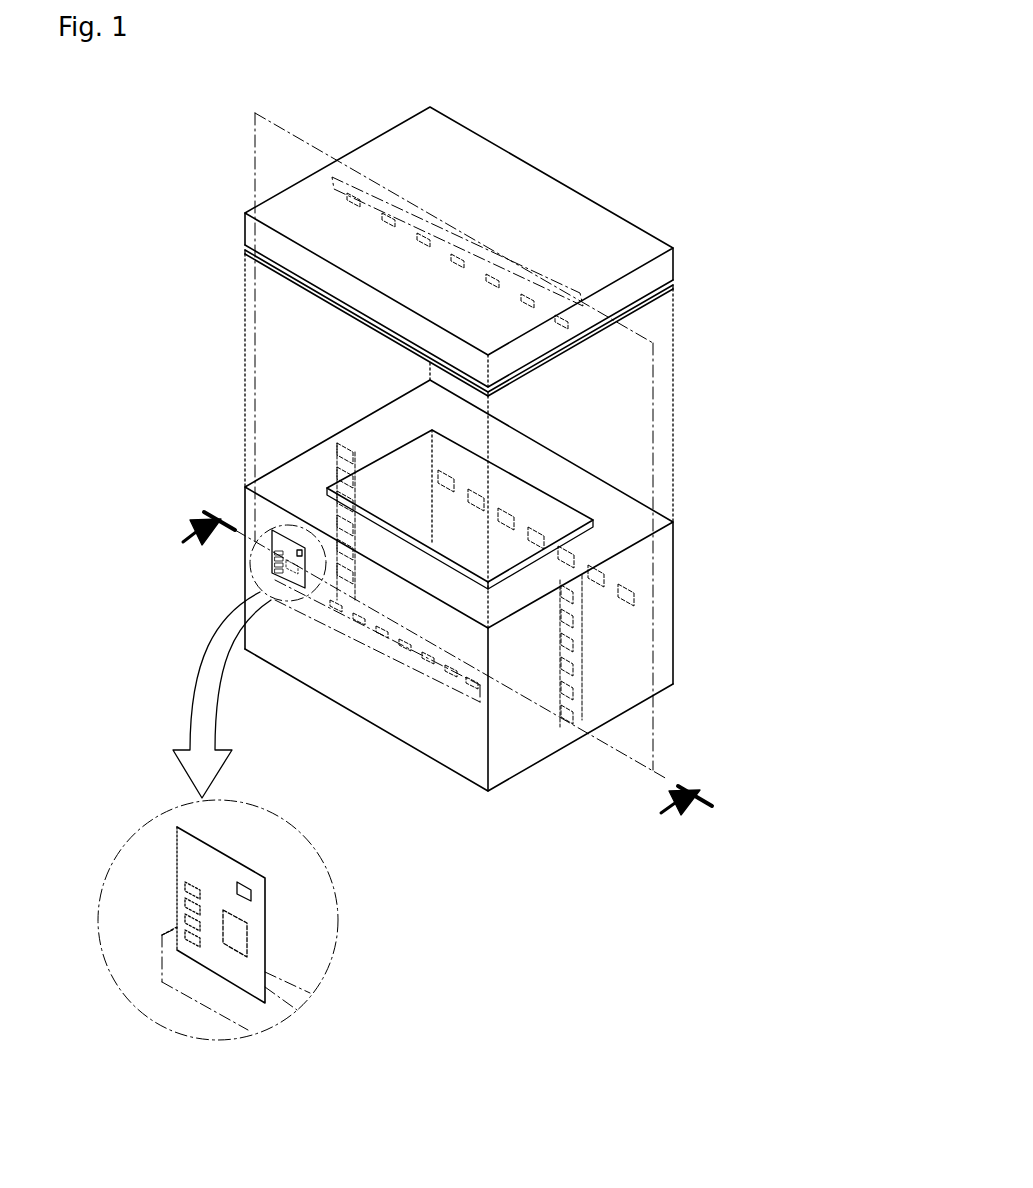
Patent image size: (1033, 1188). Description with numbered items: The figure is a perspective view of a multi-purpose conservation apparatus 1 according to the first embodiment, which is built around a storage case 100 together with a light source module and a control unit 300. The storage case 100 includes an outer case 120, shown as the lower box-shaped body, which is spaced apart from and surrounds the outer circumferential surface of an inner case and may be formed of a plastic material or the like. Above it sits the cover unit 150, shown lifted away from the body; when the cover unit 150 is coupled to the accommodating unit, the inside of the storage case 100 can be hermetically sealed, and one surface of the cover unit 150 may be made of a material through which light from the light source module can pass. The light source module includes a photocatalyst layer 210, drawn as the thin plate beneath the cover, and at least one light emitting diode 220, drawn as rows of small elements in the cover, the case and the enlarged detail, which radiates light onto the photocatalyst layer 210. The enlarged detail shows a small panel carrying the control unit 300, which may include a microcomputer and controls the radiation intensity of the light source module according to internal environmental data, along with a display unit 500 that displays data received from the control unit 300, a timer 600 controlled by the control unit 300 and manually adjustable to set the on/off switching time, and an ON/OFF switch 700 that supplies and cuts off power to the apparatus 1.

The multi-purpose conservation apparatus 1 is at (492, 71).
The storage case 100 is at (777, 297).
The outer case 120 is at (668, 543).
The cover unit 150 is at (673, 275).
The photocatalyst layer 210 is at (245, 247).
The light emitting diode 220 is at (348, 194).
The control unit 300 is at (248, 945).
The display unit 500 is at (185, 888).
The timer 600 is at (177, 927).
The ON/OFF switch 700 is at (252, 890).